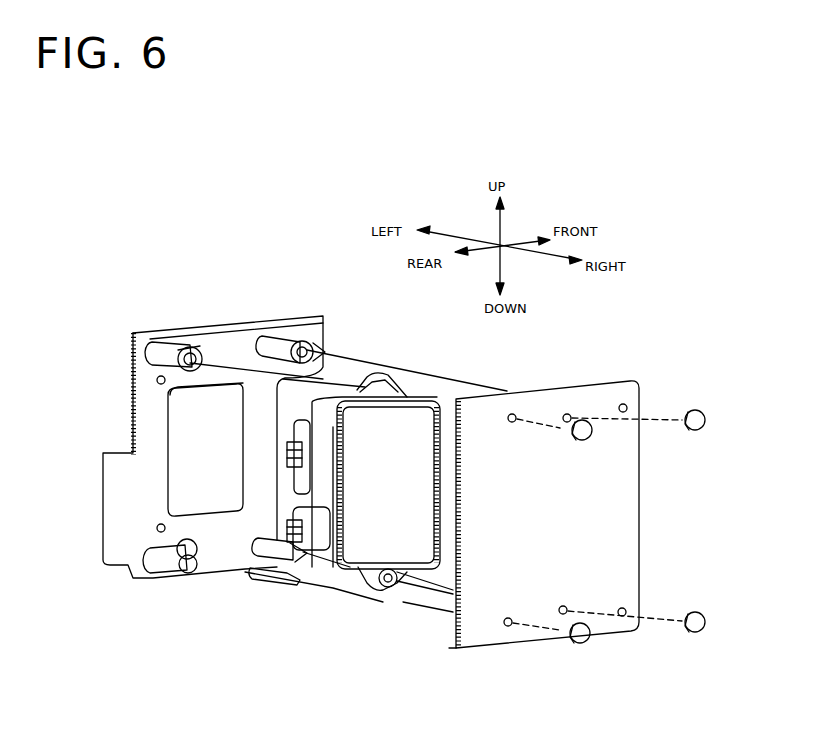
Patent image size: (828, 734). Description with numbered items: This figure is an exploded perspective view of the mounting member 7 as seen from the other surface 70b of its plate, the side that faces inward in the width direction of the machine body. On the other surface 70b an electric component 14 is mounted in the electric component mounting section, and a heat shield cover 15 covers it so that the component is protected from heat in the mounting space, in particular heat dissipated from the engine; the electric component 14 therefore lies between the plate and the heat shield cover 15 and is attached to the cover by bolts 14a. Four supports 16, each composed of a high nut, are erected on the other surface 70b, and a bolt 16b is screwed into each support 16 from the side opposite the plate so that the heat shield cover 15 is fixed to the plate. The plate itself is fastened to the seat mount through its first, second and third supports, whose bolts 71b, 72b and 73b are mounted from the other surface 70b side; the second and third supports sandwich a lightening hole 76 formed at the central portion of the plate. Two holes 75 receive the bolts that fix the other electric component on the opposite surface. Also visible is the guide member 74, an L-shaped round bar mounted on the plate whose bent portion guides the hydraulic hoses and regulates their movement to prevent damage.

The mounting member 7 is at (129, 343).
The electric component 14 is at (318, 573).
The bolts 14a is at (398, 388).
The heat shield cover 15 is at (598, 383).
The supports 16 is at (185, 345).
The bolt 16b is at (570, 440).
The other surface 70b is at (147, 407).
The bolt 71b is at (323, 347).
The bolt 72b is at (196, 352).
The bolt 73b is at (203, 548).
The guide member 74 is at (274, 588).
The holes 75 is at (154, 380).
The lightening hole 76 is at (193, 455).